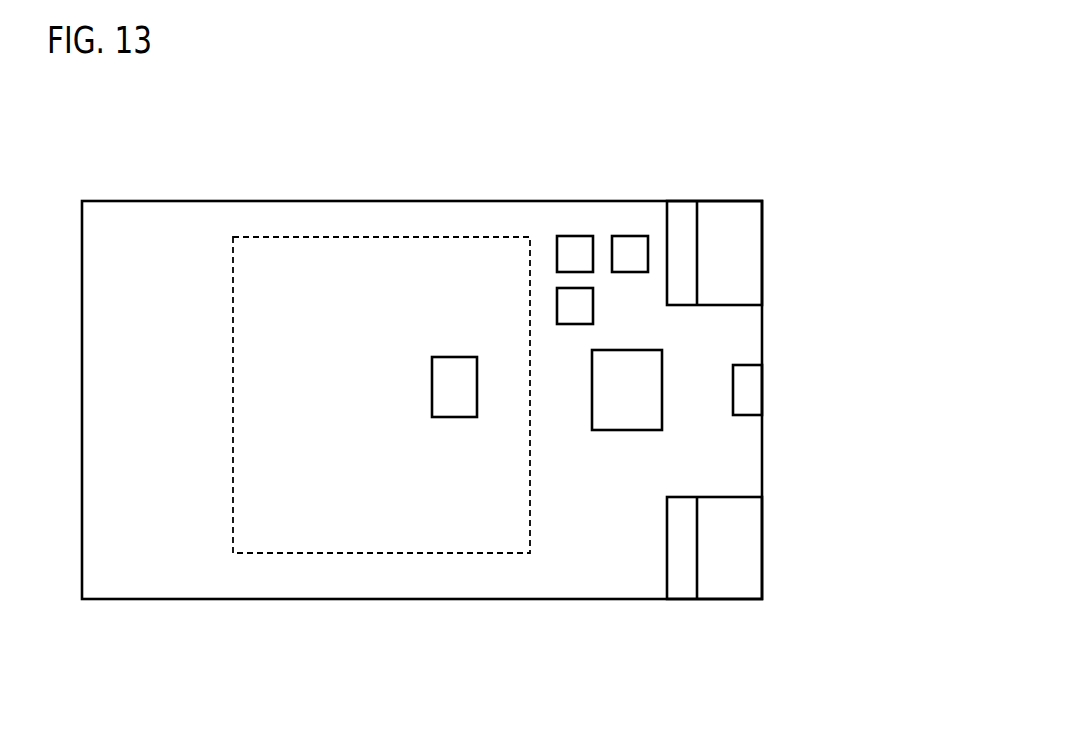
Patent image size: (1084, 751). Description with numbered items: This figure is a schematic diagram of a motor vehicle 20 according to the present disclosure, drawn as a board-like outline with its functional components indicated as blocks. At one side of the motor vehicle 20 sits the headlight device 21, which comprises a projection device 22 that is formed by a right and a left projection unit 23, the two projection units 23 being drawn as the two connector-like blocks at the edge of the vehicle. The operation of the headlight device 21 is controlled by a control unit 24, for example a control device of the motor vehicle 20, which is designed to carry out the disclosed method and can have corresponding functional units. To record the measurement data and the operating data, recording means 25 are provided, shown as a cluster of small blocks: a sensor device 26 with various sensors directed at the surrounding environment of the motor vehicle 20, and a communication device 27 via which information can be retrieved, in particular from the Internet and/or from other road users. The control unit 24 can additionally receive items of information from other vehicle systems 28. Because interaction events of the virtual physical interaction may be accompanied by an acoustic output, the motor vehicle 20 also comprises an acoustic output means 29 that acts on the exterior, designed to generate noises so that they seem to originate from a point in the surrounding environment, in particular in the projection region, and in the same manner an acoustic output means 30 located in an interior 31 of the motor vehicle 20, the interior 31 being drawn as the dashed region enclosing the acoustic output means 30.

The motor vehicle 20 is at (237, 201).
The headlight device 21 is at (713, 188).
The projection device 22 is at (802, 265).
The projection unit 23 is at (748, 258).
The control unit 24 is at (625, 430).
The recording means 25 is at (603, 227).
The sensor device 26 is at (573, 236).
The communication device 27 is at (635, 236).
The other vehicle systems 28 is at (593, 307).
The acoustic output means 29 is at (752, 390).
The acoustic output means 30 is at (453, 357).
The interior 31 is at (372, 553).